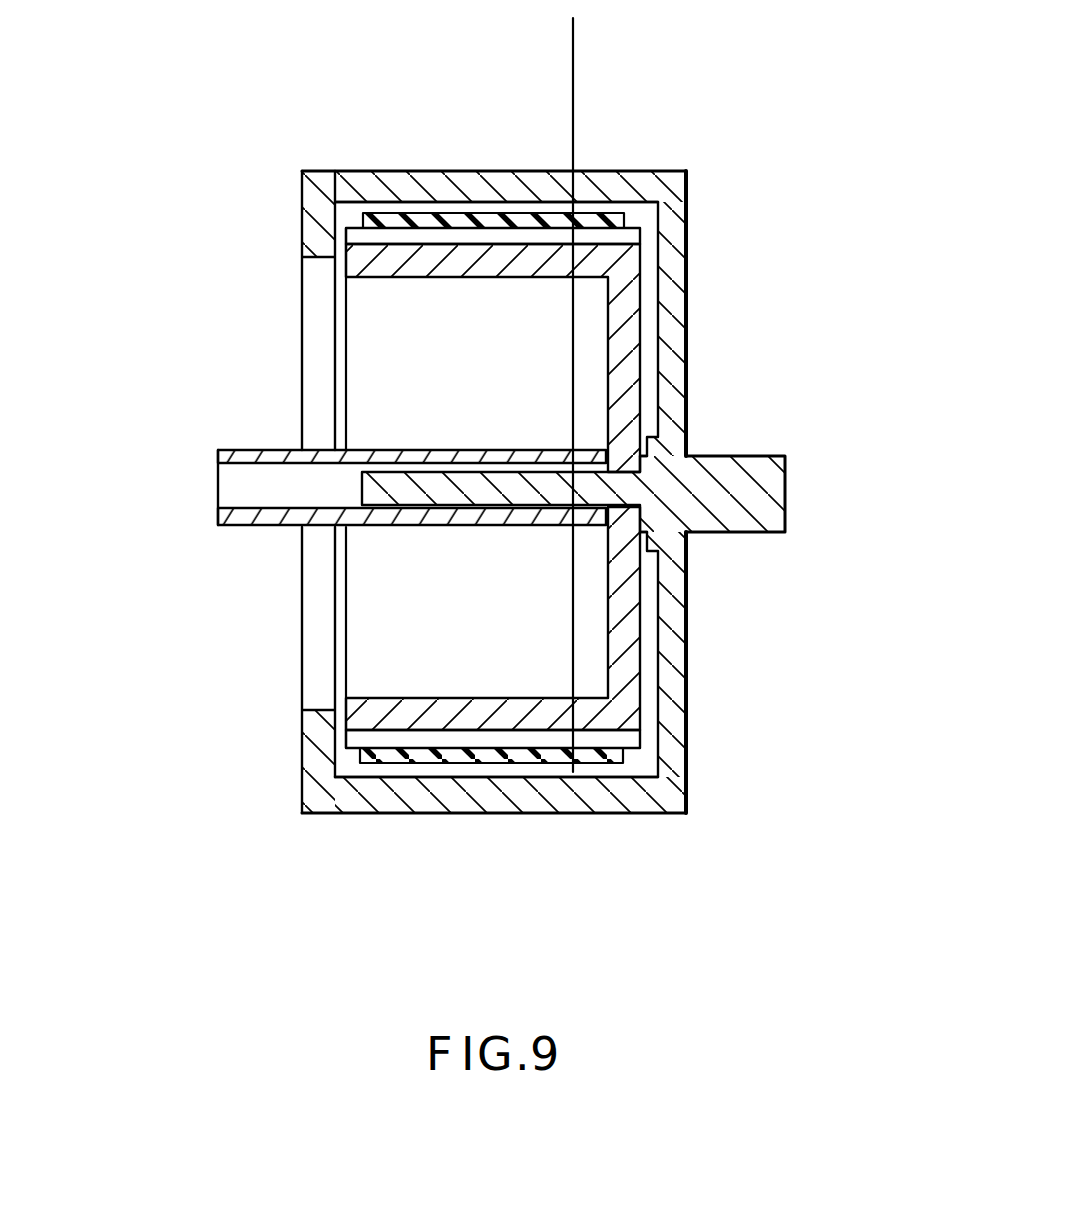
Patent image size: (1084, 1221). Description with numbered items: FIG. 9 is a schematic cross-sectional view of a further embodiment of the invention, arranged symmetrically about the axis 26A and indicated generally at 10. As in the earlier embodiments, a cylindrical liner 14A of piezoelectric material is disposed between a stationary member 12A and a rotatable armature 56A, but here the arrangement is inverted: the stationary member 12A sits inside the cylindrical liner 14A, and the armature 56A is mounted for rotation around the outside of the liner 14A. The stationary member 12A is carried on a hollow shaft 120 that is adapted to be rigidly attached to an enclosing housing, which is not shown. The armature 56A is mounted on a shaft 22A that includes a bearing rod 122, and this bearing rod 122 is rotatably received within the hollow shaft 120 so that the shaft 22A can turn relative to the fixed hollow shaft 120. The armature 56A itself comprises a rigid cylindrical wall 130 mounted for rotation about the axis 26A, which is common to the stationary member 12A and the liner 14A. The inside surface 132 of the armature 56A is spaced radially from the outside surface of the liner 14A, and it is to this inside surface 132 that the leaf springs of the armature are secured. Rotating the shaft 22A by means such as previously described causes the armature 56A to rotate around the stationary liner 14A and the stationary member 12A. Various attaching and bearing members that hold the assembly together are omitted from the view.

The axis of rotation 10 is at (573, 18).
The stationary member 12A is at (455, 335).
The piezoelectric material cylindrical liner 14A is at (590, 223).
The shaft 22A is at (740, 518).
The axis 26A is at (202, 484).
The rotatable armature 56A is at (503, 238).
The hollow shaft 120 is at (640, 236).
The bearing rod 122 is at (520, 212).
The rigid cylindrical wall 130 is at (355, 171).
The inside surface 132 is at (426, 195).